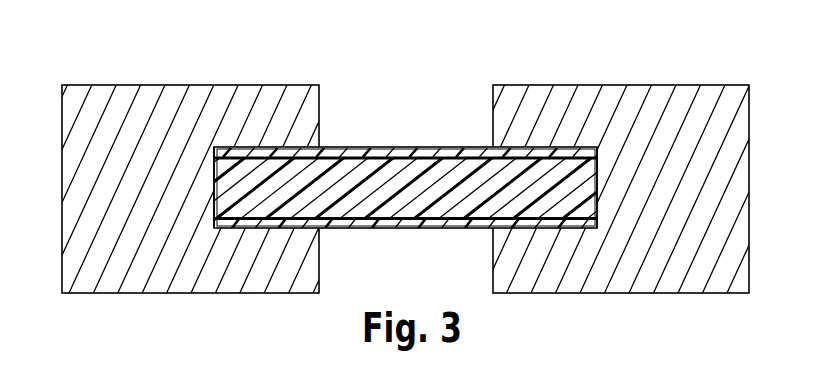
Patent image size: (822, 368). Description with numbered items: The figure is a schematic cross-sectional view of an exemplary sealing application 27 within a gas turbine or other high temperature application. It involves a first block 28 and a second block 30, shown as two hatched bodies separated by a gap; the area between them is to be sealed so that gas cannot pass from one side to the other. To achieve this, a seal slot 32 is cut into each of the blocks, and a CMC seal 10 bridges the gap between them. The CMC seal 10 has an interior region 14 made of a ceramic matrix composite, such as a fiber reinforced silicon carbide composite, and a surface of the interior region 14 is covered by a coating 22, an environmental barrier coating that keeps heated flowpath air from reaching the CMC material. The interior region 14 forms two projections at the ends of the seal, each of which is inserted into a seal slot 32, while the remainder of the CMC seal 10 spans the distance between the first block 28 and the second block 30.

The CMC seal 10 is at (404, 189).
The interior region 14 is at (372, 192).
The coating 22 is at (418, 155).
The sealing application 27 is at (358, 89).
The first block 28 is at (113, 170).
The second block 30 is at (676, 195).
The seal slot 32 is at (213, 165).